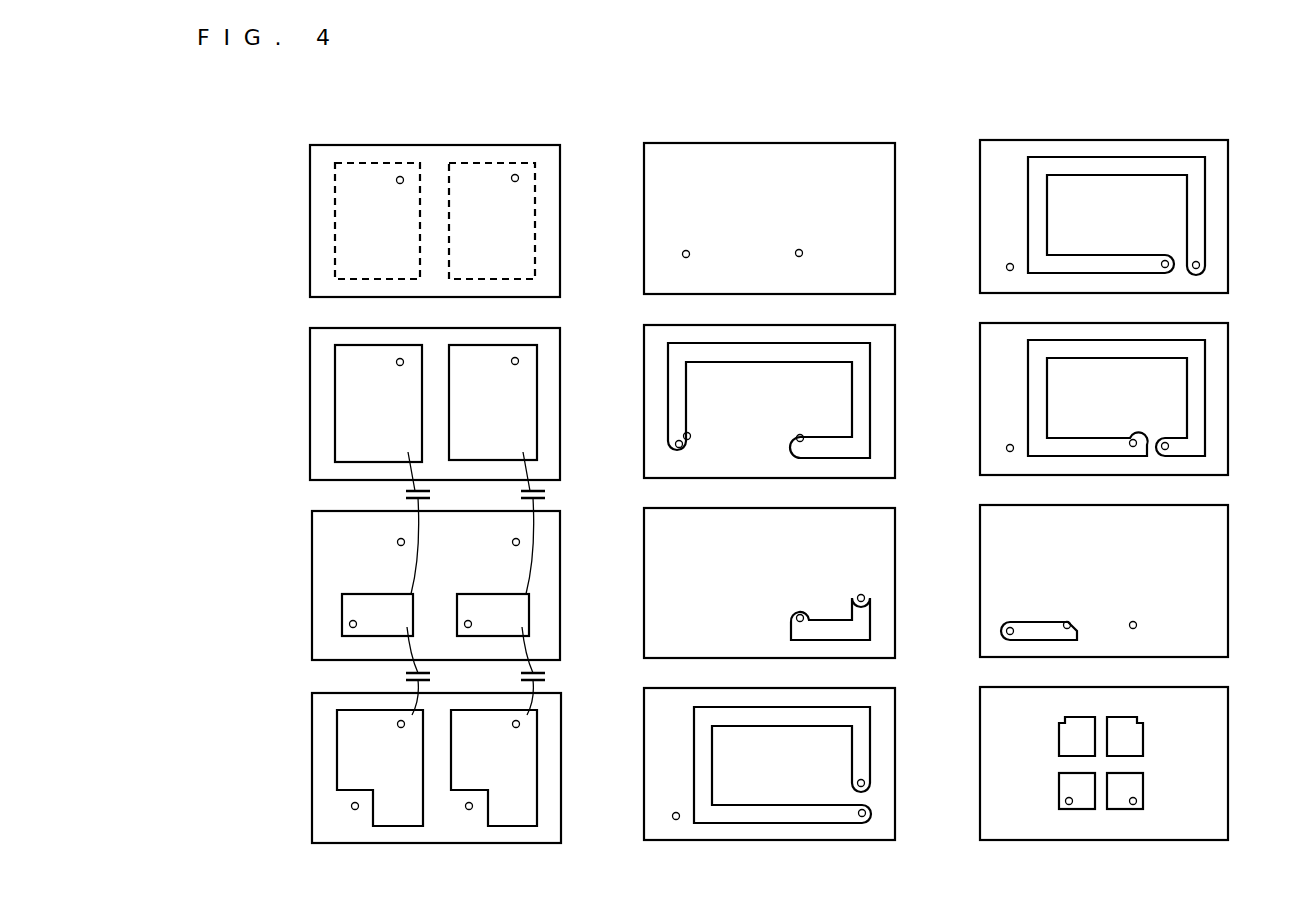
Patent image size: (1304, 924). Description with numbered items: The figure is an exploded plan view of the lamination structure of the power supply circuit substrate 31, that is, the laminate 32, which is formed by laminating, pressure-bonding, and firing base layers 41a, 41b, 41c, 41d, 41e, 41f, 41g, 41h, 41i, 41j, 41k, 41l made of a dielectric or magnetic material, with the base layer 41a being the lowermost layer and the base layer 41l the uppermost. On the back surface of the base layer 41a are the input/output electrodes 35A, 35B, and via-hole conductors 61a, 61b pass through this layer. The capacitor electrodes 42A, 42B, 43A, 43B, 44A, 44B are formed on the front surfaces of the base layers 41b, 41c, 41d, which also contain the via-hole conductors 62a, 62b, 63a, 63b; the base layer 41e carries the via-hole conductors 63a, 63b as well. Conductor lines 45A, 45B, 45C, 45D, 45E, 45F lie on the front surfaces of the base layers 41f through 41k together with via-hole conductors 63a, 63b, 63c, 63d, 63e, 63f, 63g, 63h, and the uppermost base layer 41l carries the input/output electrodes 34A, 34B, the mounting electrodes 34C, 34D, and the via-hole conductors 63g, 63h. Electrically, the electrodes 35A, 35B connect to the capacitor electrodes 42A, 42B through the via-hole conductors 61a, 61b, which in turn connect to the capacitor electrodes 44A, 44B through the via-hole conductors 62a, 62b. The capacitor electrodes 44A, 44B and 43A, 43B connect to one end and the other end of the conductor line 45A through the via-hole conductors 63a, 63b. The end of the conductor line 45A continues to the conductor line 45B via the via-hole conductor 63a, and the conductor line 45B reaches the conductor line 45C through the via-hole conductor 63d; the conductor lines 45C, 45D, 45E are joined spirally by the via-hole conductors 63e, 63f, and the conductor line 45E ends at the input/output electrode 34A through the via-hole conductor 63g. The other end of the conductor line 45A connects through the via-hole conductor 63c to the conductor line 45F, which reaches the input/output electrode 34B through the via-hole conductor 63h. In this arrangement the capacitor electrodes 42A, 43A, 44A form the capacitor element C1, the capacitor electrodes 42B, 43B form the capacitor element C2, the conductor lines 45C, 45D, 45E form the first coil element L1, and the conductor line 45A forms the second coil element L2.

The power supply circuit substrate 31 is at (652, 108).
The laminate 32 is at (614, 94).
The base layer 41a is at (310, 160).
The base layer 41b is at (310, 342).
The base layer 41c is at (312, 524).
The base layer 41d is at (312, 705).
The base layer 41e is at (644, 150).
The base layer 41f is at (644, 338).
The base layer 41g is at (644, 520).
The base layer 41h is at (644, 703).
The base layer 41i is at (980, 152).
The base layer 41j is at (980, 336).
The base layer 41k is at (980, 520).
The base layer 41l is at (980, 703).
The input/output electrode 35A is at (515, 259).
The input/output electrode 35B is at (355, 260).
The via-hole conductor 61a is at (511, 181).
The via-hole conductor 61b is at (396, 183).
The via-hole conductor 62a is at (511, 364).
The via-hole conductor 62b is at (396, 365).
The capacitor electrode 42A is at (515, 428).
The capacitor electrode 42B is at (355, 429).
The capacitor electrode 43A is at (522, 607).
The capacitor electrode 43B is at (350, 603).
The capacitor electrode 44A is at (518, 779).
The capacitor electrode 44B is at (355, 778).
The capacitor element C1 is at (555, 583).
The capacitor element C2 is at (440, 583).
The first coil element L1 is at (1010, 212).
The second coil element L2 is at (712, 385).
The conductor line 45A is at (768, 363).
The conductor line 45B is at (830, 617).
The conductor line 45C is at (768, 727).
The conductor line 45D is at (1103, 176).
The conductor line 45E is at (1103, 359).
The conductor line 45F is at (1025, 622).
The via-hole conductor 63a is at (799, 249).
The via-hole conductor 63b is at (686, 250).
The via-hole conductor 63c is at (1006, 267).
The via-hole conductor 63d is at (870, 601).
The via-hole conductor 63e is at (1200, 265).
The via-hole conductor 63f is at (1165, 260).
The via-hole conductor 63g is at (1130, 440).
The via-hole conductor 63h is at (1069, 622).
The input/output electrode 34A is at (1143, 793).
The input/output electrode 34B is at (1059, 793).
The mounting electrode 34C is at (1143, 740).
The mounting electrode 34D is at (1059, 740).